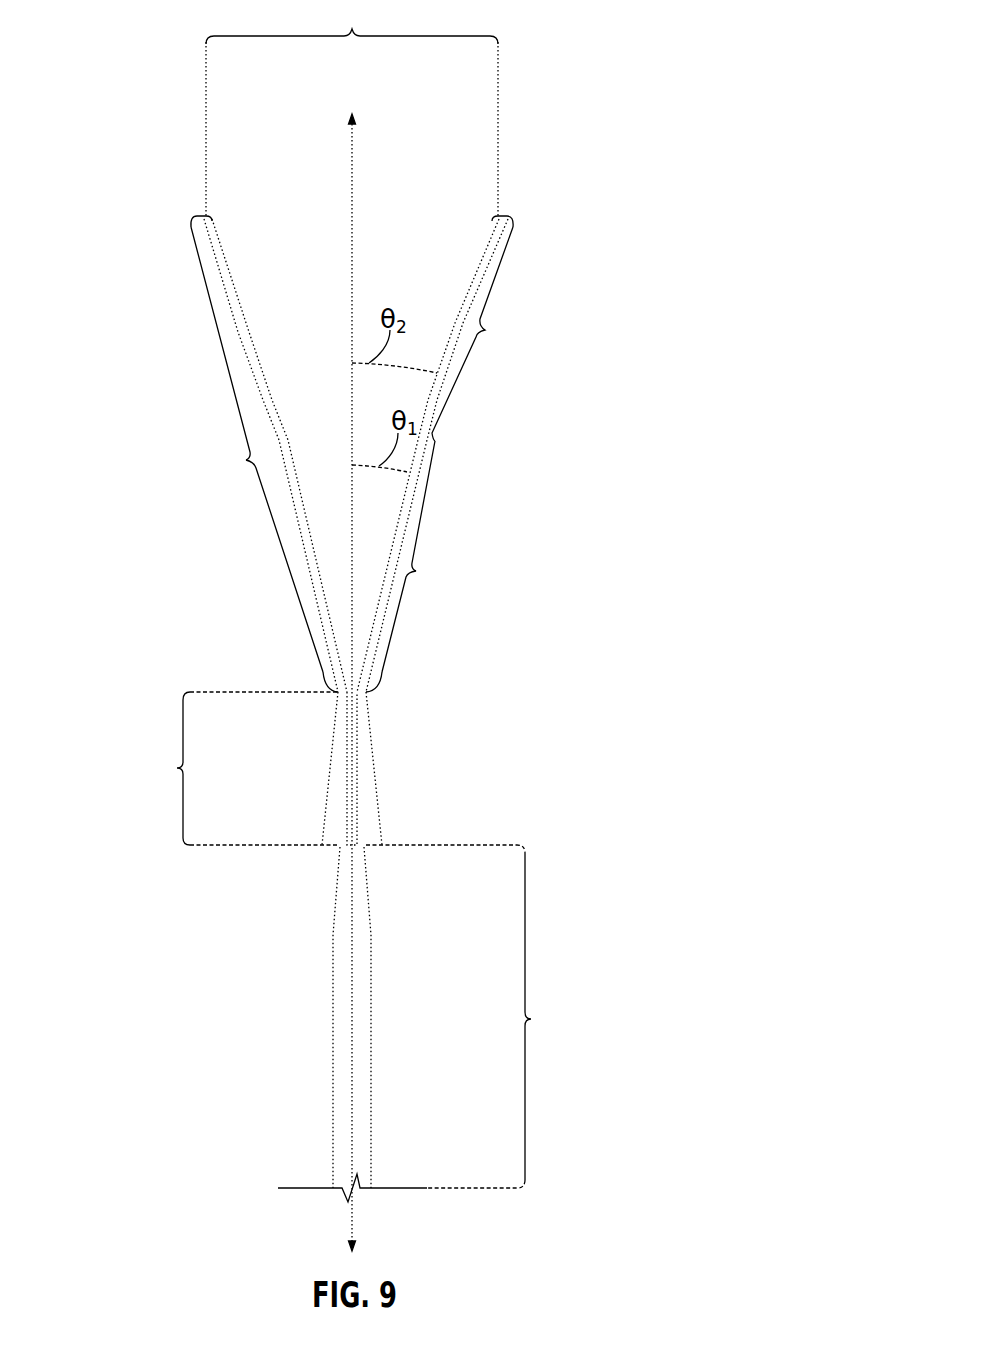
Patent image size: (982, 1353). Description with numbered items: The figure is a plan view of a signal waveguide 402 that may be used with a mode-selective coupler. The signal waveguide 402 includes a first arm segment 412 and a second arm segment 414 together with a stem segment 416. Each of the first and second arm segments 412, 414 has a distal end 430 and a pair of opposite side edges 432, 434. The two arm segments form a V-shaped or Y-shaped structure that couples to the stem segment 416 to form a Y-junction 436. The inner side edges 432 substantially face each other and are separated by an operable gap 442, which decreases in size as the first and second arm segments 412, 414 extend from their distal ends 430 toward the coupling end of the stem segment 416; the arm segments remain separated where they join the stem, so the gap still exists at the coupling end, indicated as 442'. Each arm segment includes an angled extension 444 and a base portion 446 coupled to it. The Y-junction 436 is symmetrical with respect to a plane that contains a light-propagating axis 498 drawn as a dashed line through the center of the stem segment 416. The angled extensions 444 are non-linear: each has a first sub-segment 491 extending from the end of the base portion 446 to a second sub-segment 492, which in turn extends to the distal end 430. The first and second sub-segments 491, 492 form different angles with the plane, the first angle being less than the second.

The signal waveguide 402 is at (624, 86).
The first arm segment 412 is at (269, 223).
The second arm segment 414 is at (463, 241).
The stem segment 416 is at (531, 1019).
The distal end 430 is at (199, 212).
The side edge 432 is at (253, 326).
The side edge 434 is at (228, 318).
The Y-junction 436 is at (404, 673).
The operable gap 442 is at (352, 108).
The operable gap at the coupling end 442' is at (413, 768).
The angled extension 444 is at (246, 460).
The base portion 446 is at (359, 835).
The first sub-segment 491 is at (416, 571).
The second sub-segment 492 is at (485, 329).
The light-propagating axis 498 is at (355, 148).